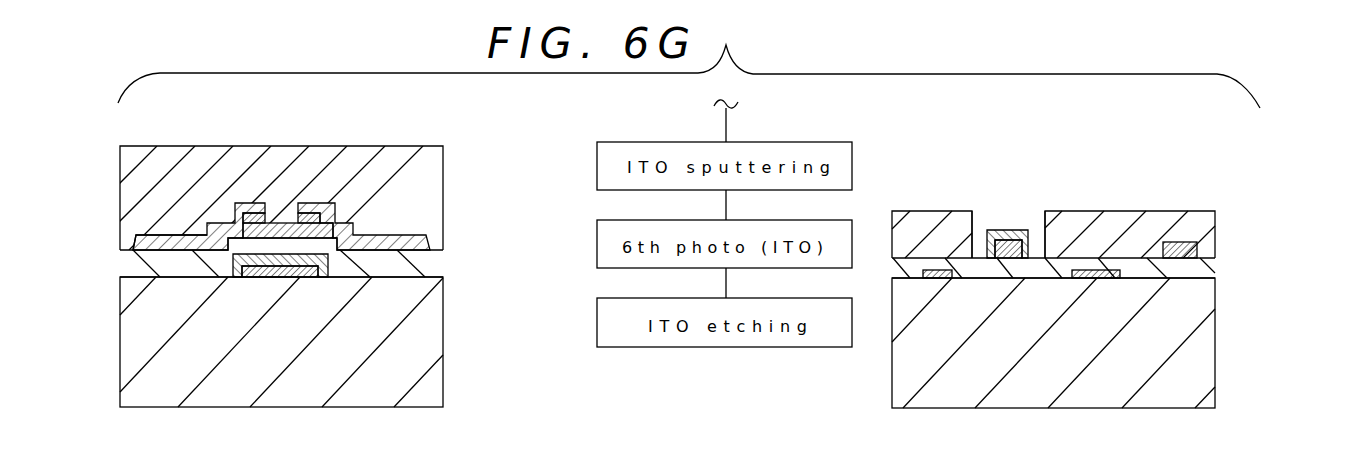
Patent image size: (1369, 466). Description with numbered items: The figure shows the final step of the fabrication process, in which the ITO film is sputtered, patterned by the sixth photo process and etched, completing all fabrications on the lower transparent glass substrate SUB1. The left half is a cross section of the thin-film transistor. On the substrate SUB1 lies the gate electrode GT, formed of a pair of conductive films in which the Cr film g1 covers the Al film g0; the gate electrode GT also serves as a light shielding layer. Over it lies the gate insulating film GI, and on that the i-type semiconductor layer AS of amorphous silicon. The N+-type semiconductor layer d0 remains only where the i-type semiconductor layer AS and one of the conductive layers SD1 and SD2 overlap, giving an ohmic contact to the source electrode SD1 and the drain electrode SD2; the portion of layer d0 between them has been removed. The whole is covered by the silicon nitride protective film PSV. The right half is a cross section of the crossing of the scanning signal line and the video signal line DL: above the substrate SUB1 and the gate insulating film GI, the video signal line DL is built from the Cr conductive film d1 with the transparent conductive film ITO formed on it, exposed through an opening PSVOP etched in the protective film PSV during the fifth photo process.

The lower transparent glass substrate SUB1 is at (428, 328).
The gate insulating film GI is at (427, 263).
The protective film PSV is at (433, 180).
The source electrode SD1 is at (420, 243).
The drain electrode SD2 is at (160, 243).
The i-type semiconductor layer AS is at (282, 225).
The N+-type semiconductor layer d0 is at (266, 212).
The gate electrode GT is at (310, 296).
The conductive film g1 is at (321, 278).
The conductive film g0 is at (297, 278).
The opening PSVOP is at (1002, 213).
The video signal line DL is at (1049, 290).
The conductive film d1 is at (1003, 250).
The conductive film of ITO is at (985, 245).